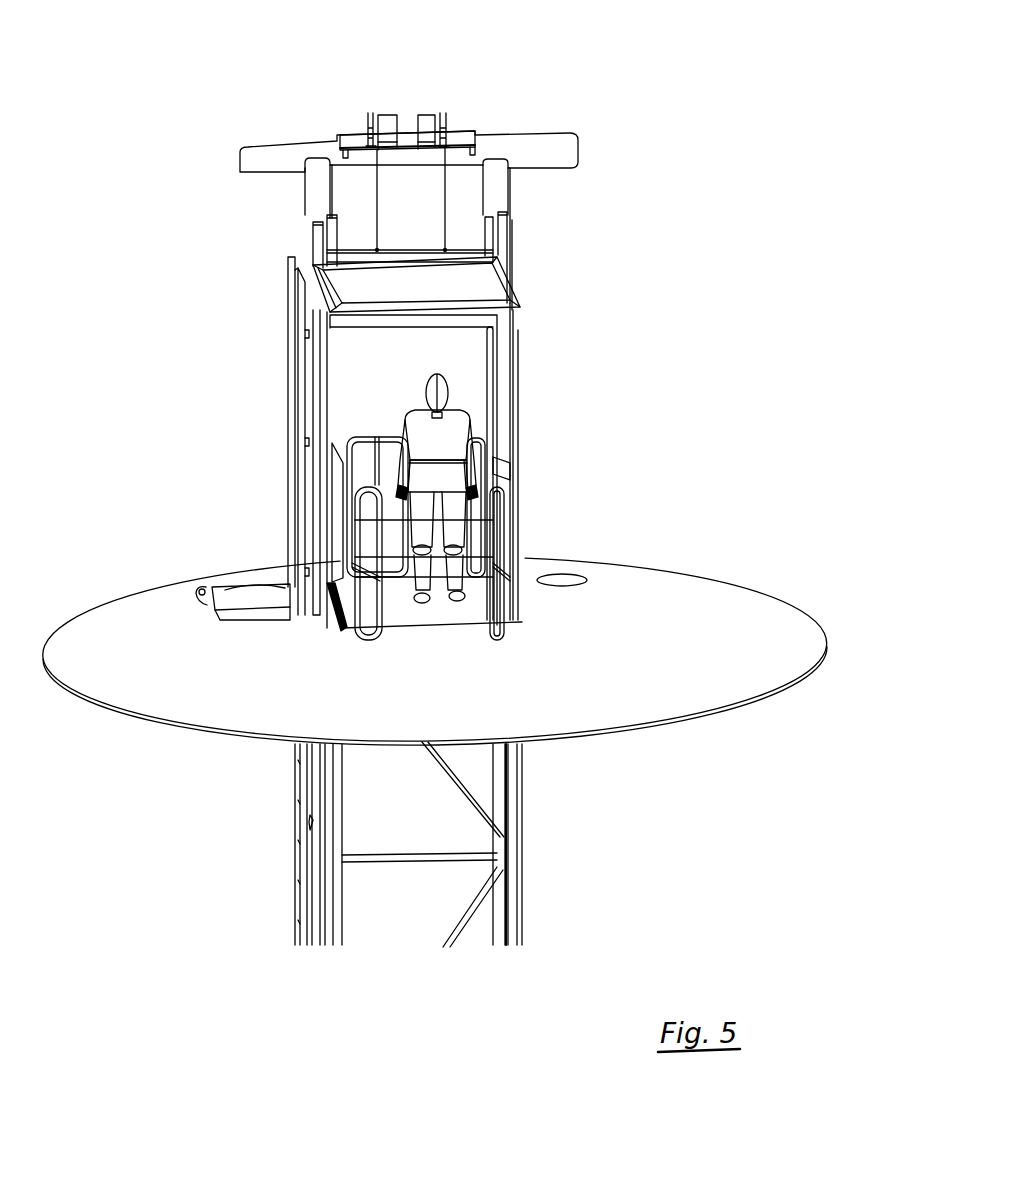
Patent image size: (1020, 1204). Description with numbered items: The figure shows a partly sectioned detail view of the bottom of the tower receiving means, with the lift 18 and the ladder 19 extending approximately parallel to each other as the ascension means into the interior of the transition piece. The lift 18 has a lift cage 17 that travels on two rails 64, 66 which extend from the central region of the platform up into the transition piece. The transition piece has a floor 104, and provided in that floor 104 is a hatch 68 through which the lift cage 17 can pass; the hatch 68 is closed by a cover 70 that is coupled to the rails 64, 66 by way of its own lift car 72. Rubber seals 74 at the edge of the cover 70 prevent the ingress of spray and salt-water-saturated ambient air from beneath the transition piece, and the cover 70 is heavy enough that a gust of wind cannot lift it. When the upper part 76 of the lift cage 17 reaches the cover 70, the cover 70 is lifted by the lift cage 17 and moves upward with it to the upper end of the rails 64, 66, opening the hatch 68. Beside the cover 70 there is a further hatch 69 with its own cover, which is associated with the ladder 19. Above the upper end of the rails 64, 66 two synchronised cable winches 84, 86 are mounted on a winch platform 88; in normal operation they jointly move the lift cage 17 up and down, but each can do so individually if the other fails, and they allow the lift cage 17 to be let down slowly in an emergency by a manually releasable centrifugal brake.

The lift cage 17 is at (520, 530).
The lift 18 is at (612, 441).
The ladder 19 is at (282, 410).
The rail 64 is at (320, 887).
The rail 66 is at (521, 885).
The hatch 68 is at (528, 614).
The further hatch 69 is at (218, 584).
The cover 70 is at (480, 278).
The lift car 72 is at (503, 244).
The rubber seals 74 is at (527, 296).
The upper part of the lift cage 76 is at (335, 330).
The cable winch 84 is at (386, 104).
The cable winch 86 is at (436, 106).
The winch platform 88 is at (466, 128).
The floor 104 is at (124, 618).